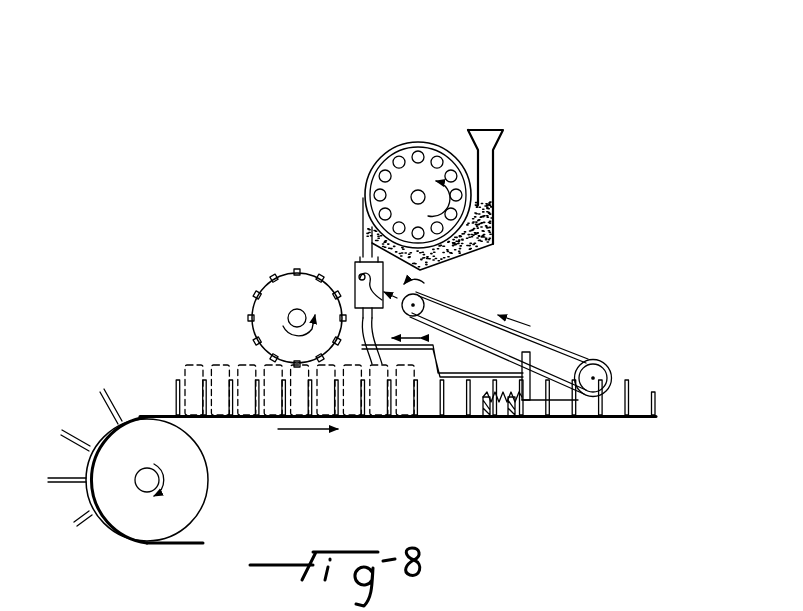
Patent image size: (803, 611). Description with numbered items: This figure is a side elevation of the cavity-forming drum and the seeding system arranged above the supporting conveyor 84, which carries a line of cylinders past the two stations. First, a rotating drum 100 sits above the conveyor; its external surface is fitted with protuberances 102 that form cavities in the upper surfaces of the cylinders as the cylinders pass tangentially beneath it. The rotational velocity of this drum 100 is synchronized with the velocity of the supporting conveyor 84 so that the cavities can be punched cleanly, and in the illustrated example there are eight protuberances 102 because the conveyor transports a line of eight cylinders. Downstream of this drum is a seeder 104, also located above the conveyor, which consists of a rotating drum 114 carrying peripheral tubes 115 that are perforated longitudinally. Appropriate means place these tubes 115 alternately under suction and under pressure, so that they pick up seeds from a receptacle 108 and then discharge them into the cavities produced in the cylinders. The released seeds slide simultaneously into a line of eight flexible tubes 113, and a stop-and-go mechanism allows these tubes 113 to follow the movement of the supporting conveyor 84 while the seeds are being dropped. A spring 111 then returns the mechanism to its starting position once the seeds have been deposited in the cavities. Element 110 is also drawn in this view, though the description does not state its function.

The supporting conveyor 84 is at (646, 422).
The rotating drum 100 is at (250, 333).
The protuberances 102 is at (275, 272).
The seeder 104 is at (500, 157).
The receptacle 108 is at (478, 251).
The belt conveyor 110 is at (597, 352).
The spring 111 is at (517, 403).
The flexible tubes 113 is at (350, 420).
The rotating drum 114 is at (425, 162).
The peripheral tubes 115 is at (406, 143).